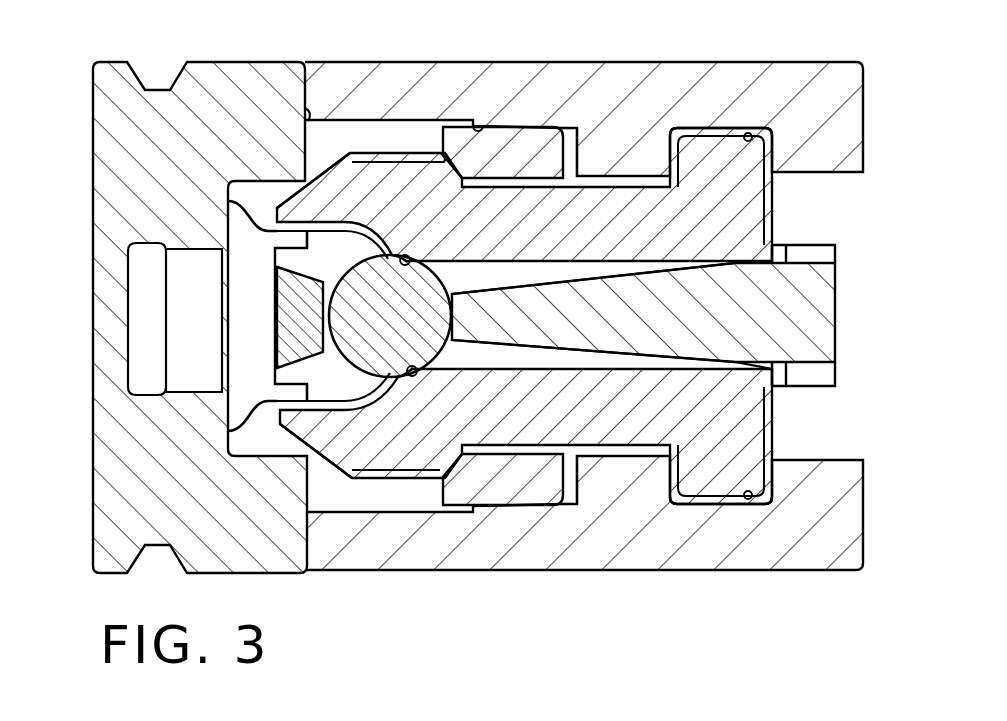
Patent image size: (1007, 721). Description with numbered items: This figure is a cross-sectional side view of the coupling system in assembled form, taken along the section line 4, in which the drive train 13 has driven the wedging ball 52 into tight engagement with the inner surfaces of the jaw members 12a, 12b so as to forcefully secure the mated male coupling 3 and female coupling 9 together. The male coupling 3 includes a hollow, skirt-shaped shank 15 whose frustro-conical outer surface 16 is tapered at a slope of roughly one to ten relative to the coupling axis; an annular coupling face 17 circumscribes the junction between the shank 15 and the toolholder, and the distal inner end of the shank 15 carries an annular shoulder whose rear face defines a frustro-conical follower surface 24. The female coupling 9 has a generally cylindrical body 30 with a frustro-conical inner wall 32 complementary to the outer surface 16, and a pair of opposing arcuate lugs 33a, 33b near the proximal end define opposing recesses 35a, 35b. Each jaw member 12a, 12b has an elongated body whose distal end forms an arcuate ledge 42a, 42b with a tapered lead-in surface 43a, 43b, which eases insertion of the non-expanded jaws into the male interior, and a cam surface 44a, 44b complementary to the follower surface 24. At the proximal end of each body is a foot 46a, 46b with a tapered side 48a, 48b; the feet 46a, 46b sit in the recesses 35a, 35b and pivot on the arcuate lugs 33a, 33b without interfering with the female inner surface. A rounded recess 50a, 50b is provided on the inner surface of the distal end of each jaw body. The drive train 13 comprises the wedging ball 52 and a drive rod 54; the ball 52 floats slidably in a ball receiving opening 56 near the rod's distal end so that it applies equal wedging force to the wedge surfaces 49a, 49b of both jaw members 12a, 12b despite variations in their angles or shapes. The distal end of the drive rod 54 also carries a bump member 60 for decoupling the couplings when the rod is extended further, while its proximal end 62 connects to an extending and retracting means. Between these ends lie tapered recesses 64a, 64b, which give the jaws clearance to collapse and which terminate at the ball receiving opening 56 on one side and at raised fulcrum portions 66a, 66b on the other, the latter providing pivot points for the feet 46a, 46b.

The male coupling 3 is at (80, 158).
The section line 4- 4 is at (385, 52).
The female coupling 9 is at (606, 588).
The jaw member 12a is at (588, 237).
The jaw member 12b is at (542, 427).
The drive train 13 is at (858, 328).
The hollow shank 15 is at (484, 165).
The frustro-conical outer surface 16 is at (476, 510).
The annular coupling face 17 is at (306, 96).
The frustro-conical follower surface 24 is at (430, 158).
The cylindrical body 30 is at (634, 106).
The frustro-conical inner wall 32 is at (478, 122).
The arcuate lug 33a is at (633, 166).
The arcuate lug 33b is at (633, 468).
The recess 35a is at (753, 130).
The recess 35b is at (753, 502).
The arcuate ledge 42a is at (381, 152).
The arcuate ledge 42b is at (345, 486).
The tapered lead-in surface 43a is at (318, 172).
The tapered lead-in surface 43b is at (272, 462).
The cam surface 44a is at (471, 190).
The cam surface 44b is at (468, 462).
The foot 46a is at (697, 177).
The foot 46b is at (697, 480).
The tapered side 48a is at (742, 128).
The tapered side 48b is at (745, 506).
The wedge surface 49a is at (407, 256).
The wedge surface 49b is at (413, 377).
The rounded recess 50a is at (228, 201).
The rounded recess 50b is at (228, 431).
The wedging ball 52 is at (403, 336).
The drive rod 54 is at (624, 335).
The ball receiving opening 56 is at (322, 284).
The bump member 60 is at (289, 340).
The proximal end 62 is at (822, 286).
The tapered recess 64a is at (513, 288).
The tapered recess 64b is at (578, 354).
The raised fulcrum portion 66a is at (752, 246).
The raised fulcrum portion 66b is at (748, 372).